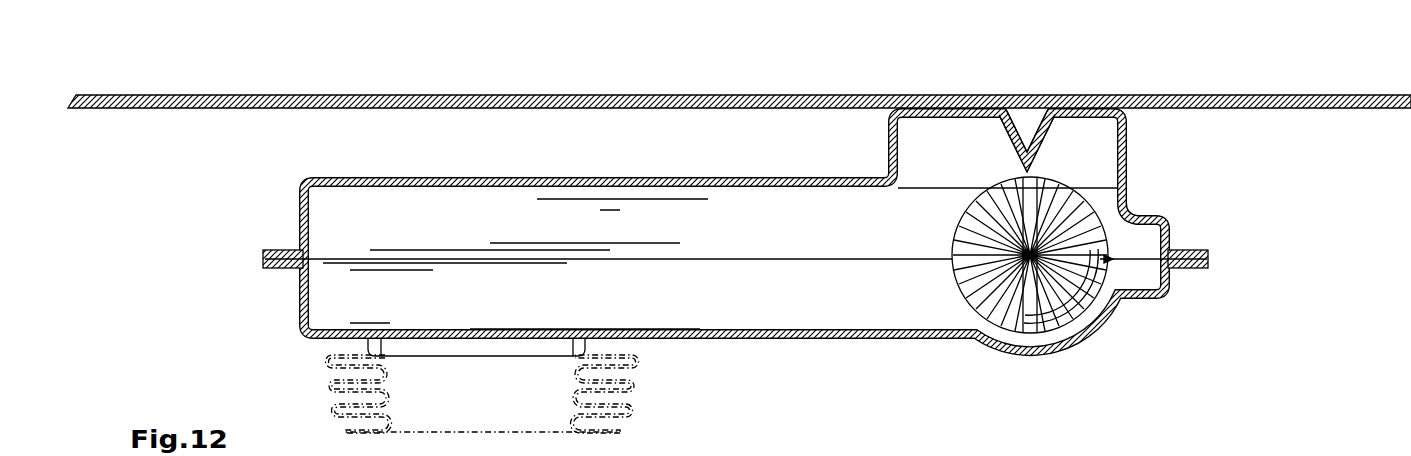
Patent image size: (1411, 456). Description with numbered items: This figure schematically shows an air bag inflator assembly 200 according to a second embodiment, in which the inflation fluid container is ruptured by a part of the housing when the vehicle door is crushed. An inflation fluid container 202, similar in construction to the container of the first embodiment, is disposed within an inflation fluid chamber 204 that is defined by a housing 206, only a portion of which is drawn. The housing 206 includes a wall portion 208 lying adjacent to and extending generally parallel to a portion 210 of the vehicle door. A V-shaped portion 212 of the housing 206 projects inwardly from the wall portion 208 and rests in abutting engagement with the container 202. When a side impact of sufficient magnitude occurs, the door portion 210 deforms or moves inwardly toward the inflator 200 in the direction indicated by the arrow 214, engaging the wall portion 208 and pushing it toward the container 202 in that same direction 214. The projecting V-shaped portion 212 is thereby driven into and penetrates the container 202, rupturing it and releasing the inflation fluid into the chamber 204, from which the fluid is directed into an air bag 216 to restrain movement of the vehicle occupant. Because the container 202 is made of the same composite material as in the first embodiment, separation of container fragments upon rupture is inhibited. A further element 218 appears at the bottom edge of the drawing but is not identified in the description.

The air bag inflator assembly 200 is at (882, 366).
The inflation fluid container 202 is at (915, 282).
The inflation fluid chamber 204 is at (818, 241).
The housing 206 is at (1140, 180).
The wall portion 208 is at (947, 118).
The door portion 210 is at (626, 95).
The V-shaped portion 212 is at (1040, 162).
The direction arrow 214 is at (840, 30).
The air bag 216 is at (622, 433).
The lower element 218 is at (909, 452).